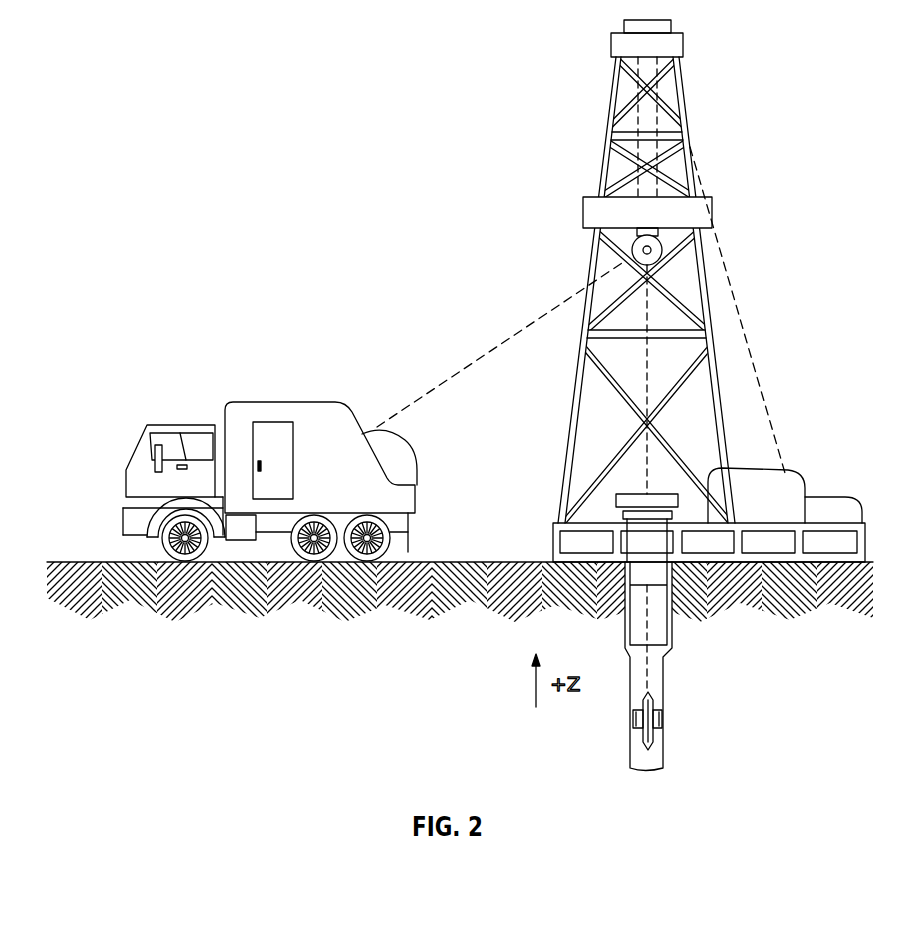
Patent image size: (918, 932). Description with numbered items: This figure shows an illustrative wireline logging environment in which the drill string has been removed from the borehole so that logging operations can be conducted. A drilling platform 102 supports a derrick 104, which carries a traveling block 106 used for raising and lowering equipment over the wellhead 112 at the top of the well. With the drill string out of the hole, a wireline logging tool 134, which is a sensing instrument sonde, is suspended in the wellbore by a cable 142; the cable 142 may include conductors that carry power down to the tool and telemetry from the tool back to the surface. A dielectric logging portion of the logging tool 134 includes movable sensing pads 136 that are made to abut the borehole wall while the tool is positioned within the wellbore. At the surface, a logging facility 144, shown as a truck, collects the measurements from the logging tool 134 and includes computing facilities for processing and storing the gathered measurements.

The drilling platform 102 is at (552, 545).
The derrick 104 is at (558, 510).
The traveling block 106 is at (652, 256).
The wellhead 112 is at (622, 492).
The wireline logging tool 134 is at (649, 718).
The movable sensing pads 136 is at (661, 728).
The cable 142 is at (505, 340).
The logging facility 144 is at (292, 401).